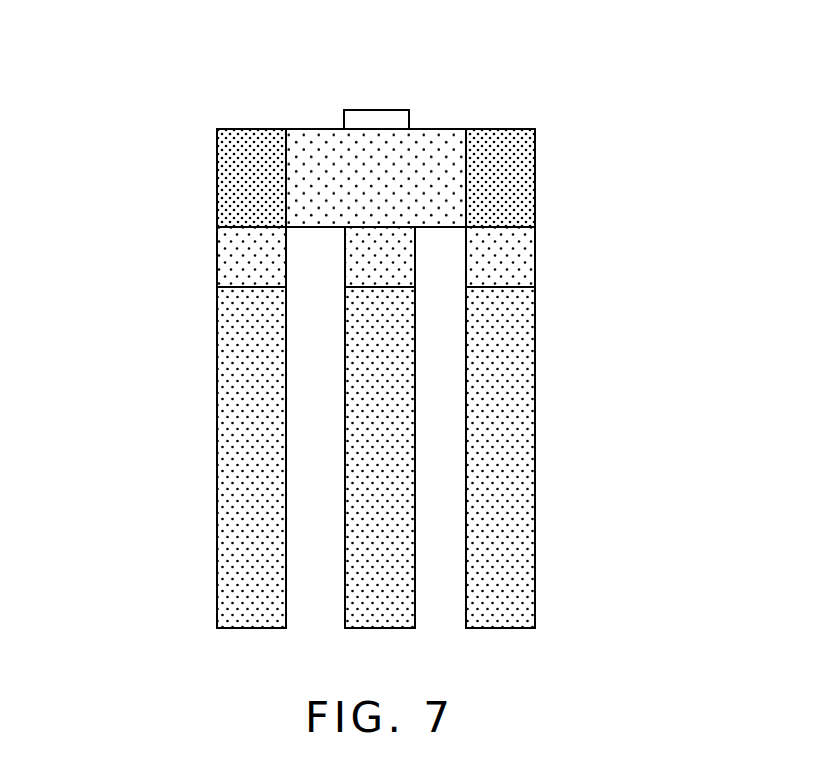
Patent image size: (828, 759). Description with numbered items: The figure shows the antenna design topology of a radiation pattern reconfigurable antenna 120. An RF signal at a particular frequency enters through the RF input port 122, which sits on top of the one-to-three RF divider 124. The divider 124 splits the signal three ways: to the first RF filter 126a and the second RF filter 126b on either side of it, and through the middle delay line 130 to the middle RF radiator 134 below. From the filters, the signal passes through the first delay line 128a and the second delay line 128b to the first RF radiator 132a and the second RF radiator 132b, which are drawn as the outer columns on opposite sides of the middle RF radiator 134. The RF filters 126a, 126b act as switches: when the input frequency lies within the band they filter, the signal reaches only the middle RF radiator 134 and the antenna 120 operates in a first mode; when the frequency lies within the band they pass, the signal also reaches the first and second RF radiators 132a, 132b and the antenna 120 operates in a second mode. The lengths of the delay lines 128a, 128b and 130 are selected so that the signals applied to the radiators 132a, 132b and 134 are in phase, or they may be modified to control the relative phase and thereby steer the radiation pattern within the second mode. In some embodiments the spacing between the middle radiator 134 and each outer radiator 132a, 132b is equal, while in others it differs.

The radiation pattern reconfigurable antenna 120 is at (198, 62).
The RF input port 122 is at (366, 110).
The one-to-three RF divider 124 is at (420, 141).
The first RF filter 126a is at (232, 142).
The second RF filter 126b is at (527, 143).
The first delay line 128a is at (233, 272).
The second delay line 128b is at (528, 262).
The middle delay line 130 is at (380, 247).
The first RF radiator 132a is at (242, 454).
The second RF radiator 132b is at (515, 453).
The middle RF radiator 134 is at (397, 406).